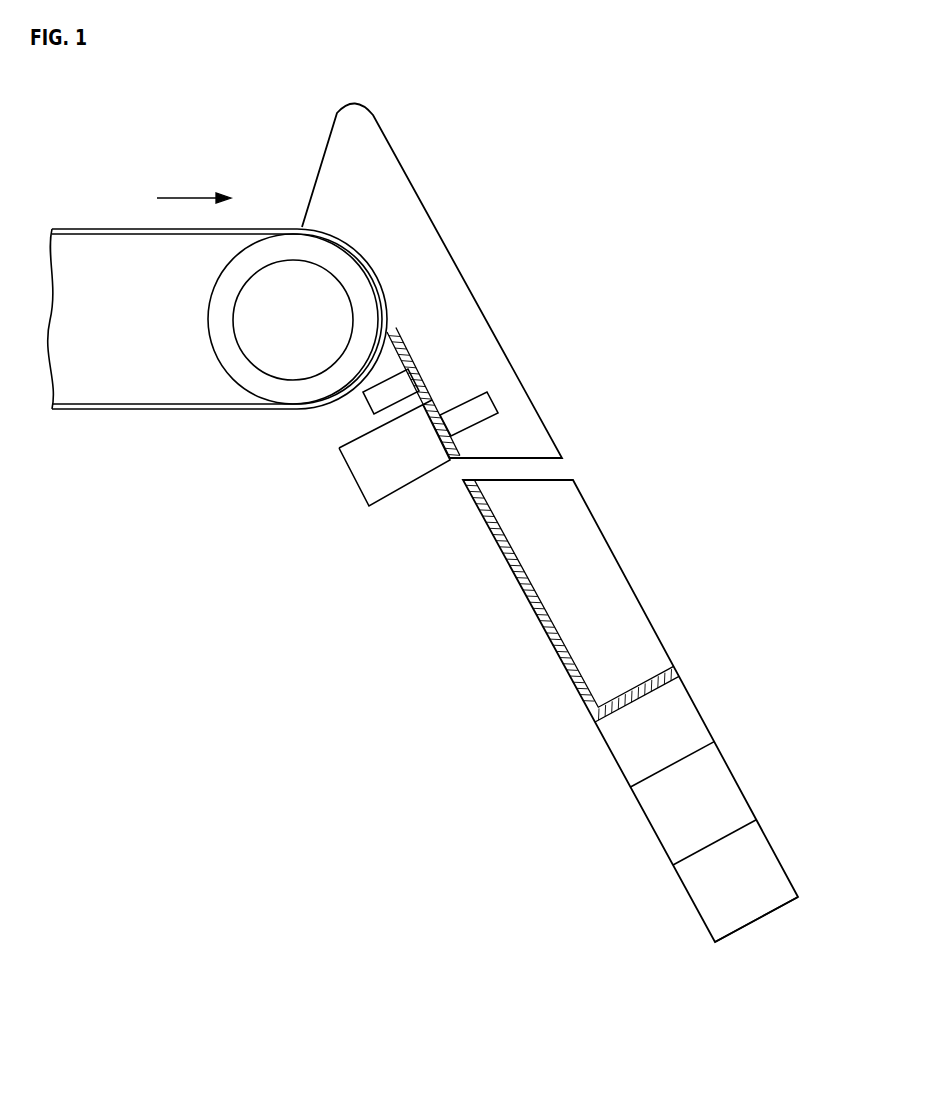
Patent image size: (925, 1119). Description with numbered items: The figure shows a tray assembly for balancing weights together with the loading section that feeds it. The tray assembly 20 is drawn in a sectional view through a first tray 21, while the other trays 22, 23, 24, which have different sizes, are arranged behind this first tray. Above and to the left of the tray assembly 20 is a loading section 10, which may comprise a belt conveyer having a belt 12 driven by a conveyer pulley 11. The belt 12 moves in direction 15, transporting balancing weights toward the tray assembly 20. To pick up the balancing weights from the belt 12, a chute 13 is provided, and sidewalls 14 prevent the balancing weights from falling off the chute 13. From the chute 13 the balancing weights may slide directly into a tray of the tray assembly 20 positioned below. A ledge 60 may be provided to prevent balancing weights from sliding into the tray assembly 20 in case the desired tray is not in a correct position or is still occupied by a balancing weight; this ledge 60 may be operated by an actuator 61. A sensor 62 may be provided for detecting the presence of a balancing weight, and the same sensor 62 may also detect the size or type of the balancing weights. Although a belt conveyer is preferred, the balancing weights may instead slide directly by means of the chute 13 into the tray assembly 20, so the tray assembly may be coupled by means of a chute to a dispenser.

The loading section 10 is at (128, 446).
The conveyer pulley 11 is at (284, 305).
The belt 12 is at (104, 229).
The chute 13 is at (428, 410).
The sidewalls 14 is at (450, 290).
The direction 15 is at (191, 196).
The tray assembly 20 is at (680, 574).
The first tray 21 is at (632, 643).
The tray 22 is at (673, 720).
The tray 23 is at (712, 792).
The tray 24 is at (755, 870).
The ledge 60 is at (483, 408).
The actuator 61 is at (372, 470).
The sensor 62 is at (371, 402).